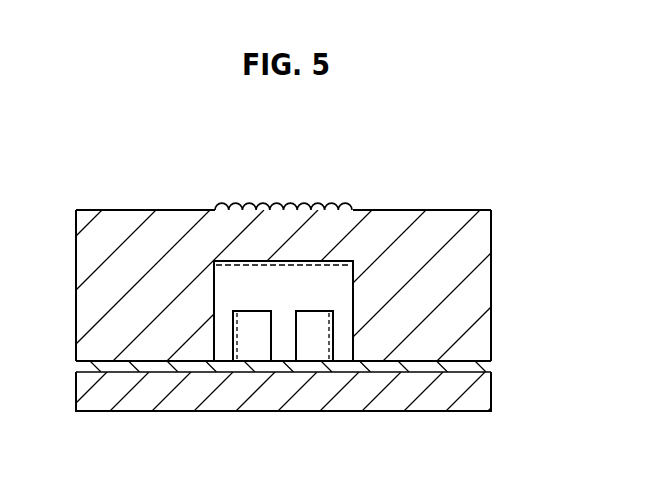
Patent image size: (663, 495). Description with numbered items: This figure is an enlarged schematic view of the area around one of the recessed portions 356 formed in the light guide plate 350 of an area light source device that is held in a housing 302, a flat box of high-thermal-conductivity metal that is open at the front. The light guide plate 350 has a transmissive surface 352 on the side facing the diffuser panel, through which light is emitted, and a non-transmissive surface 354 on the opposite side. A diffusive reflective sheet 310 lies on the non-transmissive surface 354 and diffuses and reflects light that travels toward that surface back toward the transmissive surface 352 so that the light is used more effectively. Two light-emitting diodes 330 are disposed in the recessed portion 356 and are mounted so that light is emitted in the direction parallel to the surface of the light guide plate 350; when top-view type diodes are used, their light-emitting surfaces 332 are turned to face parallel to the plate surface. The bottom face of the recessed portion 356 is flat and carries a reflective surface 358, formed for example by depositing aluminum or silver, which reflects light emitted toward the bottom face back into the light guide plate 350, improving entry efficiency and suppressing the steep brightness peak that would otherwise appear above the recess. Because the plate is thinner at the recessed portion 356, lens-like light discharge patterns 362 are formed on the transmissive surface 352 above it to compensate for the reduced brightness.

The housing 302 is at (462, 395).
The diffusive reflective sheet 310 is at (160, 372).
The light-emitting diodes 330 is at (255, 350).
The light-emitting surfaces 332 is at (215, 330).
The light guide plate 350 is at (473, 295).
The transmissive surface 352 is at (100, 209).
The non-transmissive surface 354 is at (103, 363).
The recessed portion 356 is at (353, 333).
The reflective surface 358 is at (282, 263).
The light discharge patterns 362 is at (280, 203).